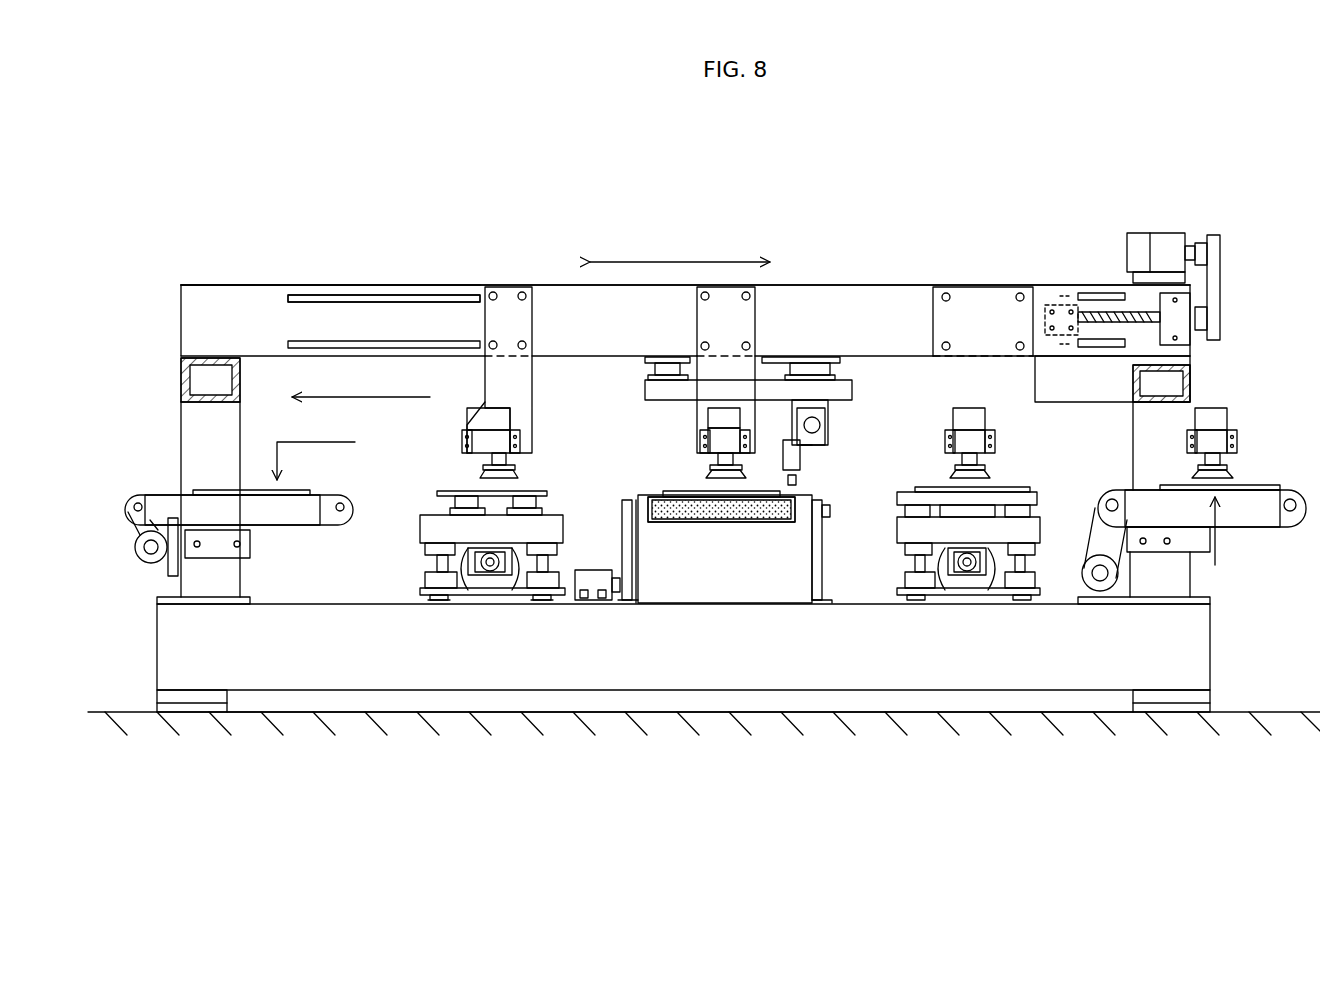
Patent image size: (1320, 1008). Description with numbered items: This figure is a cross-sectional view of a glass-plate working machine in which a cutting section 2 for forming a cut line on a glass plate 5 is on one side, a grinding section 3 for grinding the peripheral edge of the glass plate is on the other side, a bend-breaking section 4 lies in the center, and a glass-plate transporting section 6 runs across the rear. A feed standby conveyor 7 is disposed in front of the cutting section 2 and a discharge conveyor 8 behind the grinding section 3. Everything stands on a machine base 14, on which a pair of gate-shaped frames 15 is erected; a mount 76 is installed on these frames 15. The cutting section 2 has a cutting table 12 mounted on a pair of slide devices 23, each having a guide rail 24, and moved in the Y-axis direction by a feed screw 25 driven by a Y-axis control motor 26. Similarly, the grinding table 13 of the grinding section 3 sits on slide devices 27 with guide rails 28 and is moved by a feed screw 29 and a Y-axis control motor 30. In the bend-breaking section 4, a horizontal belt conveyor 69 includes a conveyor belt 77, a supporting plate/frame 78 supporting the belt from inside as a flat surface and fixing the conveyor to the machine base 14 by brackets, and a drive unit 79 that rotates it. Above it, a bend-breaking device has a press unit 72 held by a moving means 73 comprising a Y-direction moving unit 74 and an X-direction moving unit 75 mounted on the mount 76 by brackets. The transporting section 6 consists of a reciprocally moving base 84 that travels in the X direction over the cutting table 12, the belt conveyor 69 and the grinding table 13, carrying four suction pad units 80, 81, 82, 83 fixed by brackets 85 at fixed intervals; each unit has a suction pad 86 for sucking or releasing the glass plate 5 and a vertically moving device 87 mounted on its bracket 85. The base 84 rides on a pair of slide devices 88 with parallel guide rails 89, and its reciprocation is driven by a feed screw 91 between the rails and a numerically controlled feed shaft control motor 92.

The cutting section 2 is at (972, 495).
The grinding section 3 is at (508, 543).
The bend-breaking section 4 is at (708, 523).
The glass plate 5 is at (225, 485).
The glass-plate transporting section 6 is at (893, 284).
The feed standby conveyor 7 is at (1212, 505).
The discharge conveyor 8 is at (193, 510).
The cutting table 12 is at (1010, 495).
The grinding table 13 is at (450, 524).
The machine base 14 is at (880, 668).
The gate-shaped frames 15 is at (189, 382).
The slide devices 23 is at (1030, 558).
The guide rail 24 is at (917, 558).
The feed screw 25 is at (968, 565).
The Y-axis control motor 26 is at (937, 568).
The slide devices 27 is at (436, 563).
The guide rail 28 is at (443, 563).
The feed screw 29 is at (491, 565).
The Y-axis control motor 30 is at (461, 543).
The belt conveyor 69 is at (725, 523).
The press unit 72 is at (798, 470).
The moving means 73 is at (832, 383).
The Y-direction moving unit 74 is at (823, 450).
The X-direction moving unit 75 is at (775, 386).
The mount 76 is at (262, 292).
The conveyor belt 77 is at (757, 522).
The supporting plate/frame 78 is at (640, 522).
The drive unit 79 is at (598, 575).
The suction pad unit 80 is at (1213, 440).
The suction pad unit 81 is at (967, 440).
The suction pad unit 82 is at (718, 440).
The suction pad unit 83 is at (472, 441).
The reciprocally moving base 84 is at (835, 300).
The bracket 85 is at (514, 388).
The suction pad 86 is at (482, 476).
The vertically moving device 87 is at (475, 430).
The slide devices 88 is at (450, 297).
The guide rails 89 is at (342, 342).
The feed screw 91 is at (1105, 312).
The feed shaft control motor 92 is at (1165, 265).